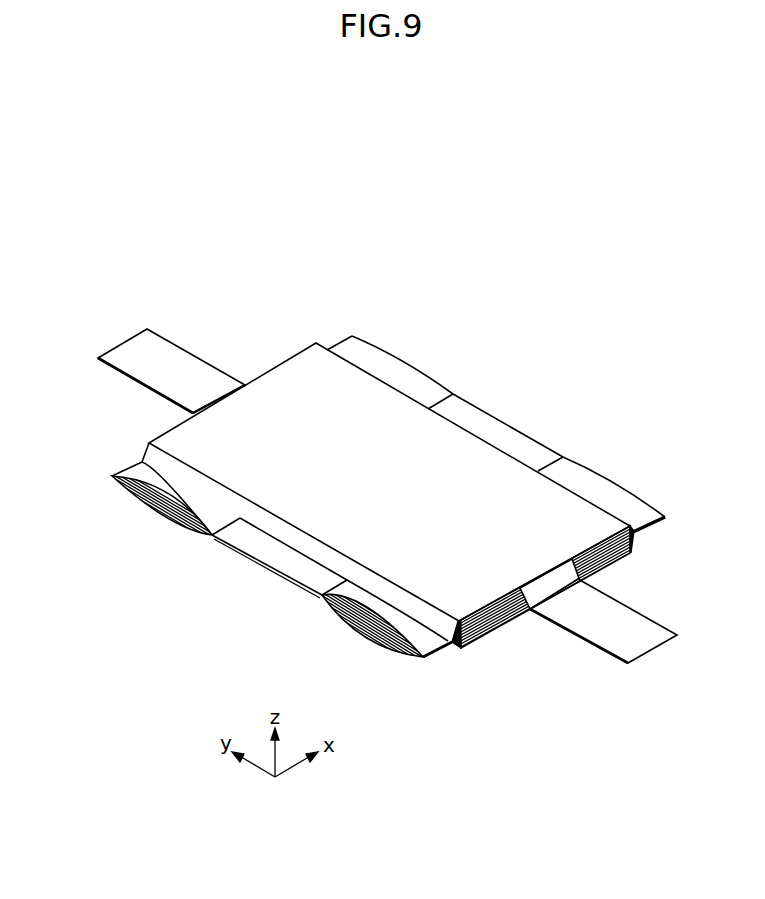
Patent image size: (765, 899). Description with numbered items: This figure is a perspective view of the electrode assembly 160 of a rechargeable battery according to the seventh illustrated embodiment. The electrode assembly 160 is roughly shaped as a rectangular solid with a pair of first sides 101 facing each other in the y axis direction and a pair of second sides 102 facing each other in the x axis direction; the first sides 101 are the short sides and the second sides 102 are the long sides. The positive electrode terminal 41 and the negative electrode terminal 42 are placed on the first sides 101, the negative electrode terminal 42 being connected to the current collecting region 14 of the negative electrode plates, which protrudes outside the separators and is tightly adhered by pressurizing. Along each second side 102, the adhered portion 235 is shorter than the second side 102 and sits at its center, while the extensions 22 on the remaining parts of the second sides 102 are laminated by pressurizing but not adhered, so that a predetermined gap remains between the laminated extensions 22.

The current collecting region 14 is at (542, 588).
The extensions 22 is at (389, 357).
The positive electrode terminal 41 is at (131, 347).
The negative electrode terminal 42 is at (618, 643).
The first sides 101 is at (283, 361).
The second sides 102 is at (335, 612).
The electrode assembly 160 is at (381, 506).
The adhered portion 235 is at (272, 552).